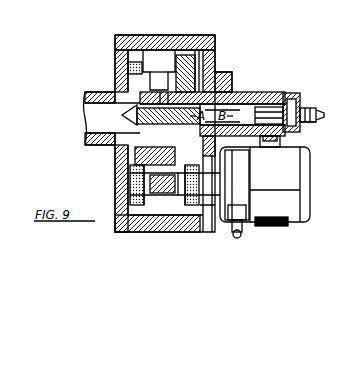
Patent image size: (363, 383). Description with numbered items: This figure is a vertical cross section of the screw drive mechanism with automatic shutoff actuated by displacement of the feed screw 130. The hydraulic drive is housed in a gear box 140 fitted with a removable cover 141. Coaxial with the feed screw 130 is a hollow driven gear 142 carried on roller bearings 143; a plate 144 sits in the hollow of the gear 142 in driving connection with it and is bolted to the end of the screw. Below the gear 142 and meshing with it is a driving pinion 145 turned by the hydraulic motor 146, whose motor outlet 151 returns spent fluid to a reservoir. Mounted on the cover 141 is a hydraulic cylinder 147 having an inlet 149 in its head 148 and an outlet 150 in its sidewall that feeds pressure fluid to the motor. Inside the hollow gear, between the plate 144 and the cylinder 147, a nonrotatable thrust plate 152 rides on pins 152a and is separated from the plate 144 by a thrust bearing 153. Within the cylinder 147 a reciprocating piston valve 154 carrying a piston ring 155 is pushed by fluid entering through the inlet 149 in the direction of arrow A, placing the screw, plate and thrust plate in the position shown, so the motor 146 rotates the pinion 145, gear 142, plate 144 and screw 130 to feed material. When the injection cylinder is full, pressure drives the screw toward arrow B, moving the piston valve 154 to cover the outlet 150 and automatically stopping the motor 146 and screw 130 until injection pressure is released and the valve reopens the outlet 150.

The feed screw 130 is at (85, 112).
The gear box 140 is at (126, 38).
The removable cover 141 is at (208, 40).
The driven gear 142 is at (160, 50).
The roller bearings 143 is at (118, 40).
The plate 144 is at (128, 64).
The driving pinion 145 is at (118, 113).
The hydraulic motor 146 is at (272, 228).
The hydraulic cylinder 147 is at (284, 99).
The head 148 is at (300, 98).
The inlet 149 is at (307, 123).
The outlet 150 is at (278, 138).
The motor outlet 151 is at (236, 236).
The thrust plate 152 is at (190, 55).
The pins 152a is at (230, 97).
The thrust bearing 153 is at (165, 96).
The piston valve 154 is at (252, 95).
The piston ring 155 is at (260, 104).